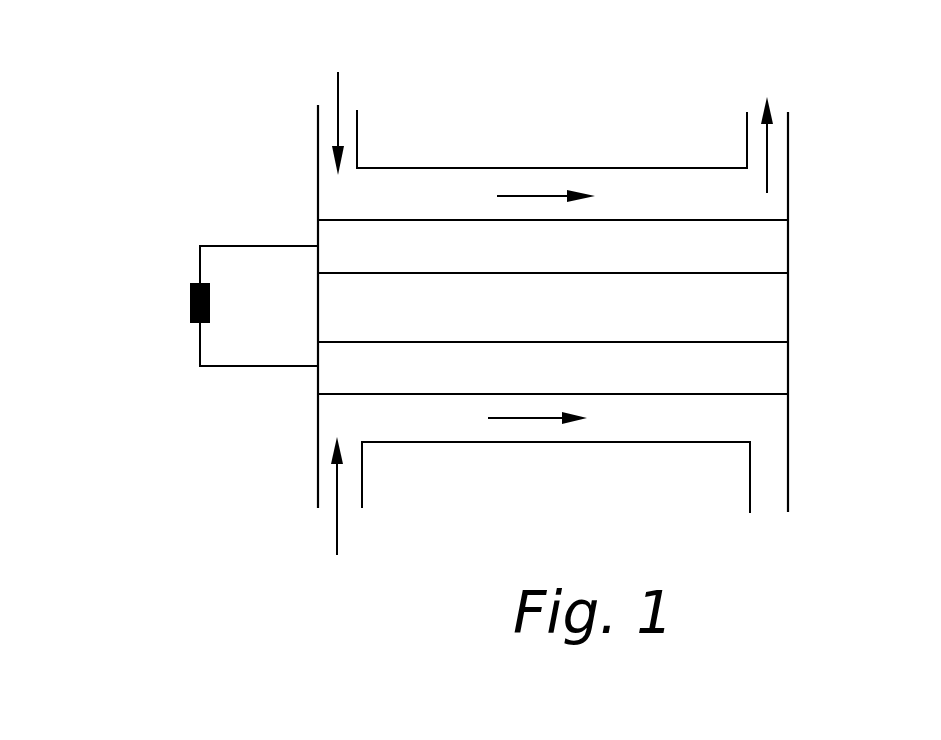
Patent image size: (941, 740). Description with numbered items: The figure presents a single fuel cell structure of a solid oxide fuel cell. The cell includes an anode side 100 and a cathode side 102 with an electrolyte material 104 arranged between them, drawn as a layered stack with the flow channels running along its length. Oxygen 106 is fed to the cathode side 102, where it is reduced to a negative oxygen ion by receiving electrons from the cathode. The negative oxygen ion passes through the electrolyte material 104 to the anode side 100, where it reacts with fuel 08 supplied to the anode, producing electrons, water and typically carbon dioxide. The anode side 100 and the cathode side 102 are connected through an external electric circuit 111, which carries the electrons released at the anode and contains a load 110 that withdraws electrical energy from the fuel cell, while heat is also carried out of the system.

The fuel 08 is at (338, 93).
The anode side 100 is at (757, 244).
The cathode side 102 is at (752, 363).
The electrolyte material 104 is at (760, 303).
The oxygen 106 is at (335, 538).
The load 110 is at (190, 307).
The external electric circuit 111 is at (180, 210).